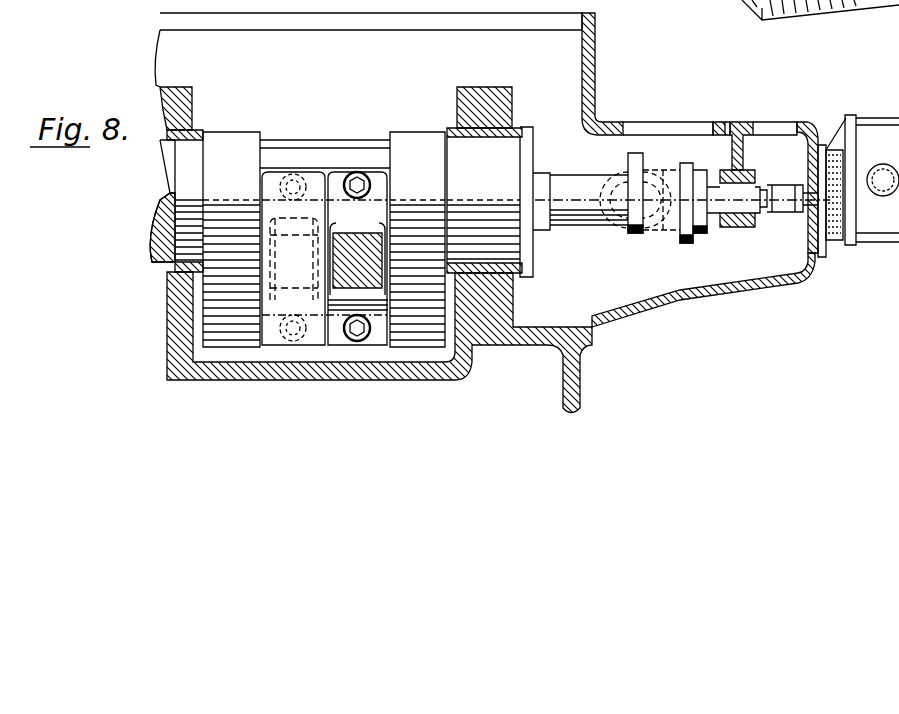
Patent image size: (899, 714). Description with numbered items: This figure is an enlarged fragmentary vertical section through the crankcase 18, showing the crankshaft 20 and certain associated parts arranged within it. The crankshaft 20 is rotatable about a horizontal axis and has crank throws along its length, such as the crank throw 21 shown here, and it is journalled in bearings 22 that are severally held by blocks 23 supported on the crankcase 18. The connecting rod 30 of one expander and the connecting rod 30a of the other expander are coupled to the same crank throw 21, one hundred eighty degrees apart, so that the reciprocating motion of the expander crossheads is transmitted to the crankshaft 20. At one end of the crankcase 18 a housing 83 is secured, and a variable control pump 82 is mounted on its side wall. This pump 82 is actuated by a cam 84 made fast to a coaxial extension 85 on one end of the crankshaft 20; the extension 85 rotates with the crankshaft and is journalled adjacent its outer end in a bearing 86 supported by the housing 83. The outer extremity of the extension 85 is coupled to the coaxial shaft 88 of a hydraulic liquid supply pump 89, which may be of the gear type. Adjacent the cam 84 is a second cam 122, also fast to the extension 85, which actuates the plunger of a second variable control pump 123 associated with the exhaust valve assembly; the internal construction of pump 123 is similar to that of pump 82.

The crankcase 18 is at (380, 382).
The crankshaft 20 is at (165, 178).
The crank throw 21 is at (250, 118).
The bearing 22 is at (200, 130).
The block 23 is at (185, 90).
The connecting rod 30 is at (270, 221).
The connecting rod 30a is at (372, 246).
The variable control pump 82 is at (628, 176).
The housing 83 is at (752, 101).
The cam 84 is at (638, 150).
The coaxial extension 85 is at (570, 180).
The bearing 86 is at (742, 172).
The coaxial shaft 88 is at (815, 186).
The hydraulic liquid supply pump 89 is at (890, 235).
The second cam 122 is at (700, 150).
The second variable control pump 123 is at (700, 232).